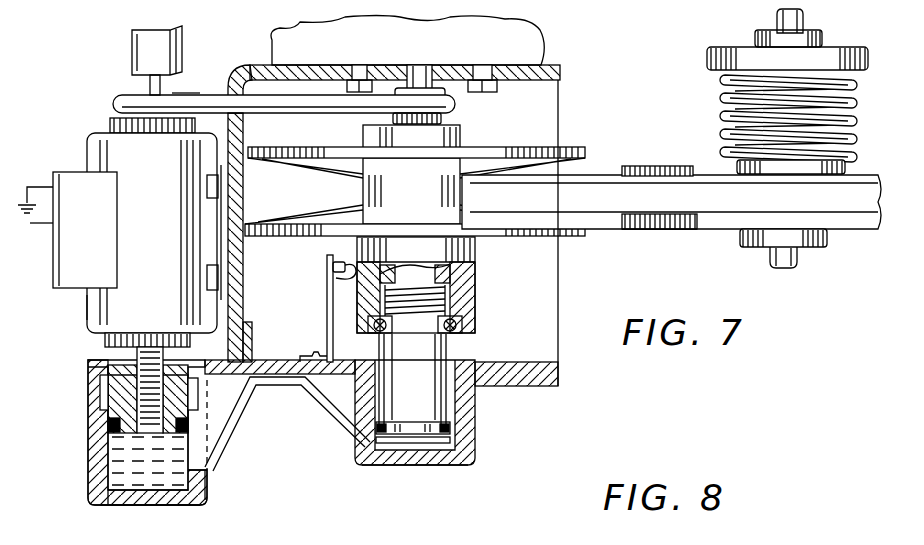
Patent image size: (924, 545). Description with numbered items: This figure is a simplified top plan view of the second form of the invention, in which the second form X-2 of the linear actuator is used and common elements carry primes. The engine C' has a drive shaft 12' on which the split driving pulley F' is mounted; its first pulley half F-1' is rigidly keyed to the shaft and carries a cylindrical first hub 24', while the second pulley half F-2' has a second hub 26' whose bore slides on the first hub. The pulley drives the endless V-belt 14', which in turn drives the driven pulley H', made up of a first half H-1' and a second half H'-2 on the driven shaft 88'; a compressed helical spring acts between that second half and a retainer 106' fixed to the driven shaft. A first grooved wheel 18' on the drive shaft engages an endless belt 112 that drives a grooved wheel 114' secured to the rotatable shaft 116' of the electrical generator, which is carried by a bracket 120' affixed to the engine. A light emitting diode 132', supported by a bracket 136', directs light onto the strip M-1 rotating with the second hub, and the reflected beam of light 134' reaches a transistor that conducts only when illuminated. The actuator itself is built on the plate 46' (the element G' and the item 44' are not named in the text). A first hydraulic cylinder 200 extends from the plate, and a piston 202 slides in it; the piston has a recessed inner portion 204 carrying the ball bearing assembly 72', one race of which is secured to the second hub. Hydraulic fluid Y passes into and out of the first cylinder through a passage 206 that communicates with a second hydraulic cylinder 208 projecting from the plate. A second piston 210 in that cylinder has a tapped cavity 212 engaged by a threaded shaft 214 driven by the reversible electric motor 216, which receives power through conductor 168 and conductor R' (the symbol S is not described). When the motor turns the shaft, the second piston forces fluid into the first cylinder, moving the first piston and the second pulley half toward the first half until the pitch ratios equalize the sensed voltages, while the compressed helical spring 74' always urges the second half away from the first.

The engine C' is at (407, 41).
The mounting plate 44' is at (394, 89).
The drive shaft 12' is at (427, 68).
The endless belt 112 is at (288, 113).
The first grooved wheel 18' is at (442, 110).
The bracket 120' is at (124, 50).
The rotatable shaft 116' is at (116, 81).
The grooved wheel 114' is at (202, 68).
The driving pulley F' is at (359, 194).
The first pulley half F-1' is at (416, 149).
The second pulley half F-2' is at (423, 251).
The endless V-belt 14' is at (671, 215).
The first half of driven pulley H-1' is at (653, 157).
The driven pulley H' is at (659, 240).
The second half of driven pulley H'-2 is at (659, 261).
The retainer 106' is at (759, 102).
The driven shaft 88' is at (770, 153).
The housing wall G' is at (393, 233).
The plate 46' is at (381, 388).
The first hub 24' is at (436, 285).
The strip M-1 is at (474, 278).
The second hub 26' is at (453, 299).
The compressed helical spring 74' is at (443, 318).
The ball bearing assembly 72' is at (446, 330).
The first hydraulic cylinder 200 is at (477, 435).
The piston 202 is at (453, 366).
The recessed inner portion 204 is at (402, 338).
The bracket 136' is at (305, 308).
The light emitting diode 132' is at (325, 255).
The reflected beam of light 134' is at (318, 284).
The reversible electric motor 216 is at (167, 299).
The switch S is at (62, 225).
The conductor R' is at (35, 176).
The conductor 168 is at (30, 223).
The second form of linear actuator X-2 is at (86, 306).
The threaded shaft 214 is at (135, 355).
The second hydraulic cylinder 208 is at (88, 468).
The tapped cavity 212 is at (136, 392).
The second piston 210 is at (108, 419).
The passage 206 is at (213, 447).
The hydraulic fluid Y is at (148, 475).